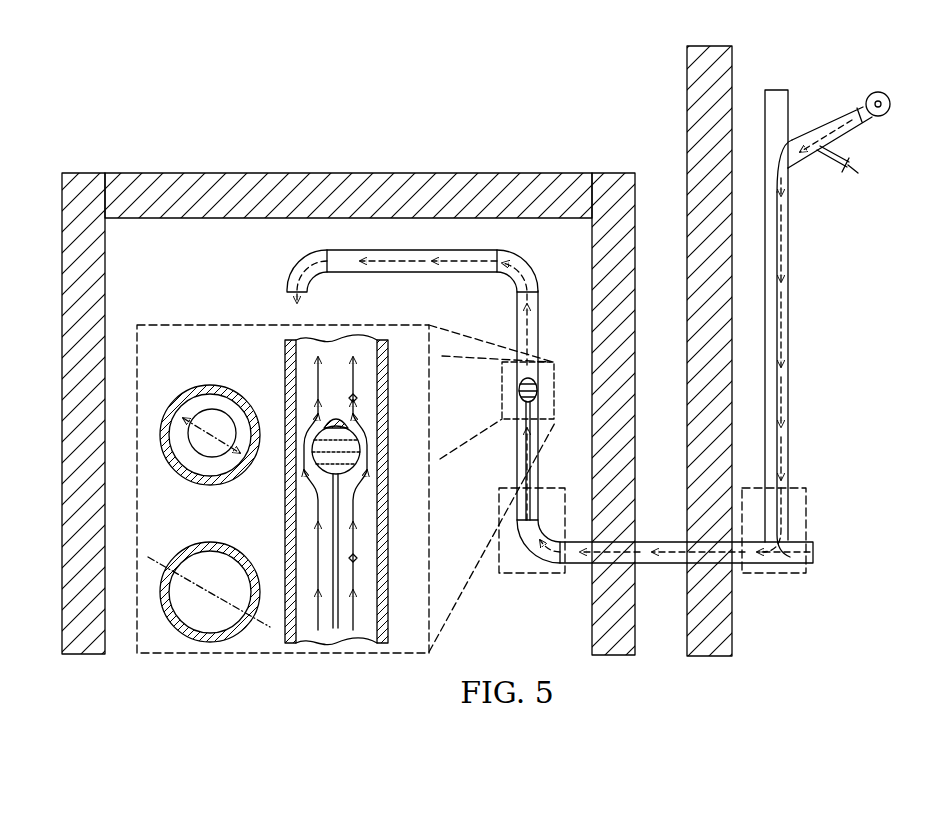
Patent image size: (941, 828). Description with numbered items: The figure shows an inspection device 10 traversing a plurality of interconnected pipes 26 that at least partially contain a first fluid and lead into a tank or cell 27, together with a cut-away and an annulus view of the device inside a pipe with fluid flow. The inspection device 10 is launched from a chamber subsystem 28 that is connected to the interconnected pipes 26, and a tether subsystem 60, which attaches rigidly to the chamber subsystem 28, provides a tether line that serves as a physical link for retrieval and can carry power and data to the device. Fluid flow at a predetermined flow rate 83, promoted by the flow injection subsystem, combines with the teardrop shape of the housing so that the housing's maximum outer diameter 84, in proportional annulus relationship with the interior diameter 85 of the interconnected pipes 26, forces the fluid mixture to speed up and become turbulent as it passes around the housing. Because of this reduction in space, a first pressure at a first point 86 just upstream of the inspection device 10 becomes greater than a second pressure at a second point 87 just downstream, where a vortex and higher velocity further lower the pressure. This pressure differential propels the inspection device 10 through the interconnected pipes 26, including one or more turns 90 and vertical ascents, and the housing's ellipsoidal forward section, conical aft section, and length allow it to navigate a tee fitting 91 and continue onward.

The inspection device 10 is at (541, 391).
The plurality of interconnected pipes 26 is at (539, 315).
The tank or cell 27 is at (405, 180).
The chamber subsystem 28 is at (826, 121).
The tether subsystem 60 is at (885, 92).
The predetermined flow rate 83 is at (525, 276).
The maximum outer diameter 84 is at (189, 421).
The interior diameter 85 is at (185, 577).
The first point 86 is at (358, 558).
The second point 87 is at (358, 398).
The turns 90 is at (532, 577).
The tee fitting 91 is at (778, 577).